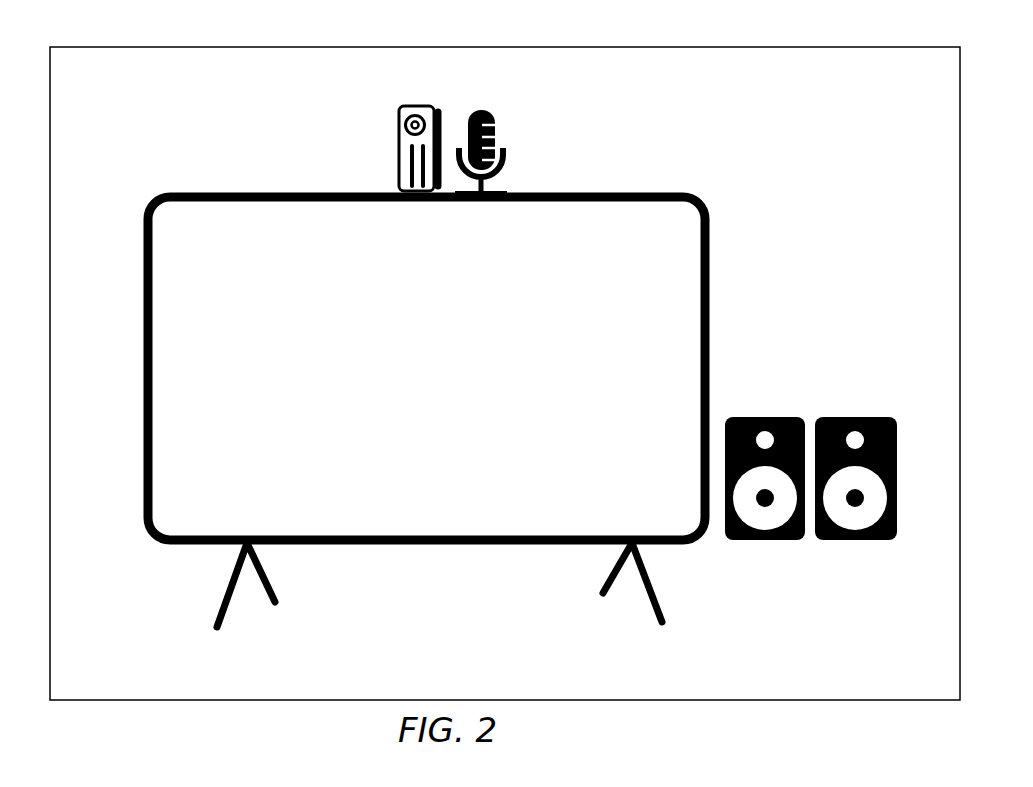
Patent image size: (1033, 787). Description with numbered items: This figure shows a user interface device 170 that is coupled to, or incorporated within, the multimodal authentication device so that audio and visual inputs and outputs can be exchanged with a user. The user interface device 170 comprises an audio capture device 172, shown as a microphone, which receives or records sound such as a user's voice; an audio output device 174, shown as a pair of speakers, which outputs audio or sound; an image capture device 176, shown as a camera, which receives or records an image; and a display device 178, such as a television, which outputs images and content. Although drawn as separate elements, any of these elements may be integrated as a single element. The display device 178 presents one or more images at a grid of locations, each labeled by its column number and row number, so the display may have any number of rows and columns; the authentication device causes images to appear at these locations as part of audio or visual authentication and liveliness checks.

The user interface device 170 is at (142, 46).
The audio capture device 172 is at (490, 110).
The audio output device 174 is at (830, 416).
The image capture device 176 is at (400, 110).
The display device 178 is at (224, 196).